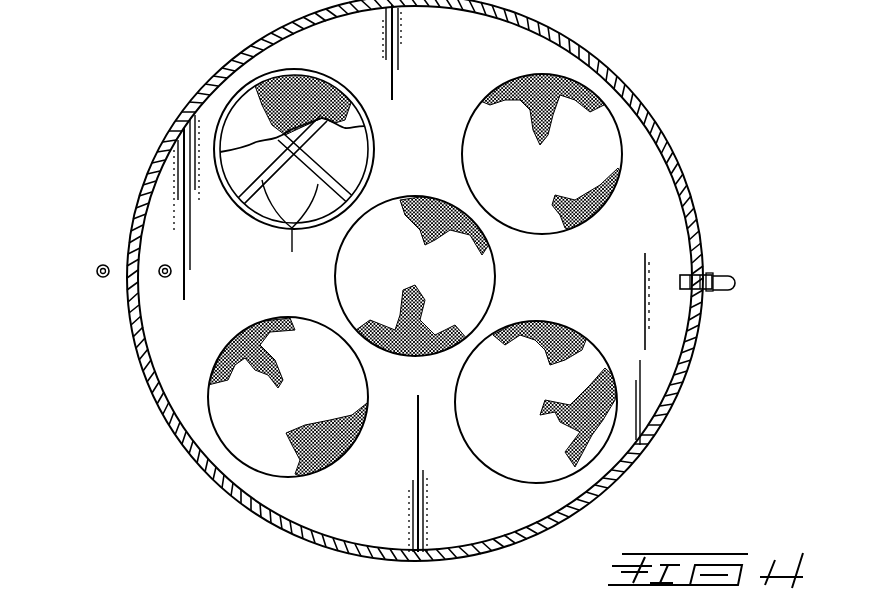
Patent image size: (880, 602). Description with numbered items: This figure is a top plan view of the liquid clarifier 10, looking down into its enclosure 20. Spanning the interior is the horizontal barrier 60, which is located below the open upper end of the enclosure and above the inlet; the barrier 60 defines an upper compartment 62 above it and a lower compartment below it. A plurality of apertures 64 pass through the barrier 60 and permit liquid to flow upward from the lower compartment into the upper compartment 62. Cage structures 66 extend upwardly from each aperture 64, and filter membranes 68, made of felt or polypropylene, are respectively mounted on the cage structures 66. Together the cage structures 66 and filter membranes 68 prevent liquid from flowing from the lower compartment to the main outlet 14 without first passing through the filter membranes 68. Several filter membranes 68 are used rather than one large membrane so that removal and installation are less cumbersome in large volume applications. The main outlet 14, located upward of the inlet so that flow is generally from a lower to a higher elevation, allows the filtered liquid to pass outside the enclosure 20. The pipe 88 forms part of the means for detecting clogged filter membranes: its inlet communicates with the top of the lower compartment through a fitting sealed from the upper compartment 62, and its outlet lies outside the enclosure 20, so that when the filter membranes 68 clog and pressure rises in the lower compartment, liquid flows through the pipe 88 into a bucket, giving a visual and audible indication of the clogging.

The clarifier 10 is at (165, 40).
The main outlet 14 is at (710, 274).
The enclosure 20 is at (216, 492).
The horizontal barrier 60 is at (465, 72).
The upper compartment 62 is at (640, 213).
The apertures 64 is at (355, 183).
The cage structures 66 is at (230, 200).
The filter membranes 68 is at (266, 129).
The pipe 88 is at (167, 278).